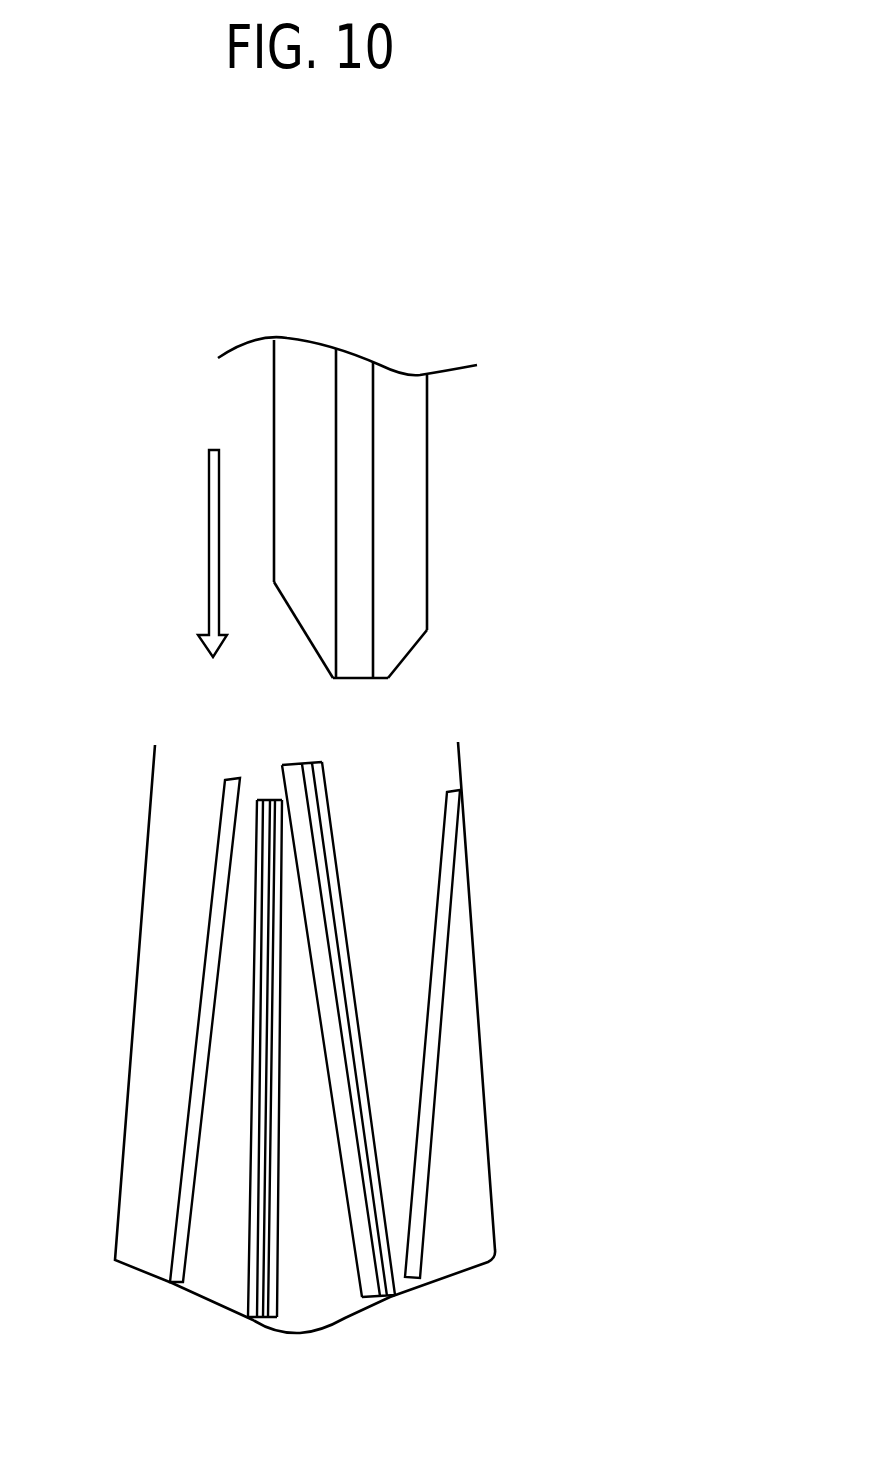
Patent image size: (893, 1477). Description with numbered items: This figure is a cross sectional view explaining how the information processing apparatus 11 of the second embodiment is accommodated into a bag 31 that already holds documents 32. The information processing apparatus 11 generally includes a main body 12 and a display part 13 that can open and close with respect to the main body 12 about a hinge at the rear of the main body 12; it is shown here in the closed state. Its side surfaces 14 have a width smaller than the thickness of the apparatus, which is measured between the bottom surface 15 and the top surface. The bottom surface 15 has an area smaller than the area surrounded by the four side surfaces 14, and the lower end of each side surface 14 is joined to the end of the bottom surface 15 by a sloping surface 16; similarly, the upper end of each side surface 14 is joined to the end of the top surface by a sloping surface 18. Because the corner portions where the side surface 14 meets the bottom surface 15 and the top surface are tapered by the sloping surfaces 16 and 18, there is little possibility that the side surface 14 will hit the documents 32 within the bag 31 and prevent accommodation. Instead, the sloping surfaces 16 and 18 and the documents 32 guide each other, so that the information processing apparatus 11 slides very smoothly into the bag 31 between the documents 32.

The information processing apparatus 11 is at (331, 494).
The main body 12 is at (357, 368).
The display part 13 is at (413, 588).
The side surface 14 is at (372, 682).
The bottom surface 15 is at (273, 385).
The sloping surface 16 is at (308, 643).
The sloping surface 18 is at (417, 647).
The bag 31 is at (473, 930).
The documents 32 is at (373, 1105).